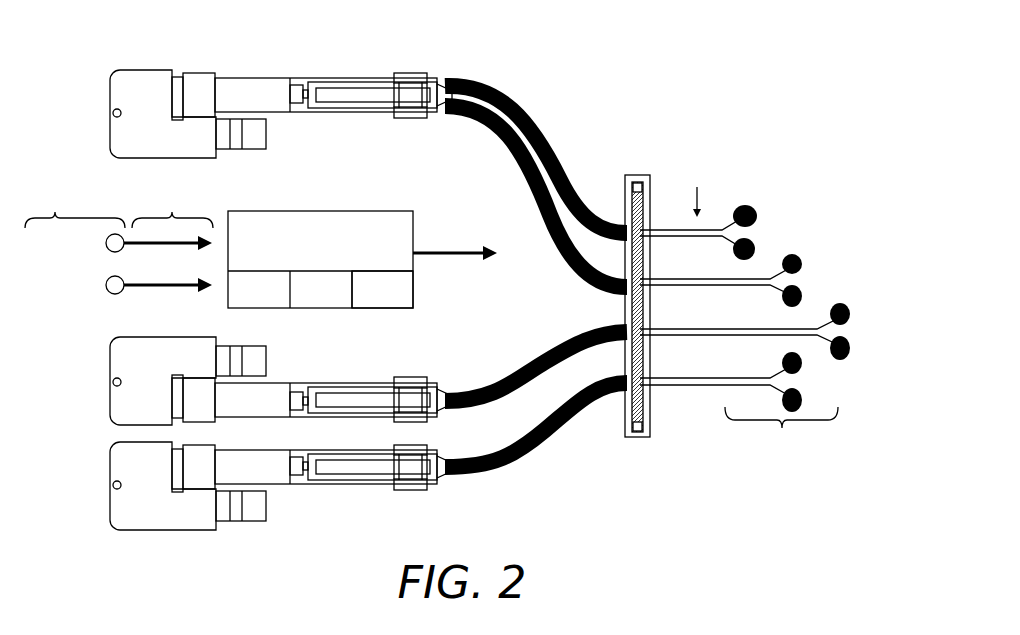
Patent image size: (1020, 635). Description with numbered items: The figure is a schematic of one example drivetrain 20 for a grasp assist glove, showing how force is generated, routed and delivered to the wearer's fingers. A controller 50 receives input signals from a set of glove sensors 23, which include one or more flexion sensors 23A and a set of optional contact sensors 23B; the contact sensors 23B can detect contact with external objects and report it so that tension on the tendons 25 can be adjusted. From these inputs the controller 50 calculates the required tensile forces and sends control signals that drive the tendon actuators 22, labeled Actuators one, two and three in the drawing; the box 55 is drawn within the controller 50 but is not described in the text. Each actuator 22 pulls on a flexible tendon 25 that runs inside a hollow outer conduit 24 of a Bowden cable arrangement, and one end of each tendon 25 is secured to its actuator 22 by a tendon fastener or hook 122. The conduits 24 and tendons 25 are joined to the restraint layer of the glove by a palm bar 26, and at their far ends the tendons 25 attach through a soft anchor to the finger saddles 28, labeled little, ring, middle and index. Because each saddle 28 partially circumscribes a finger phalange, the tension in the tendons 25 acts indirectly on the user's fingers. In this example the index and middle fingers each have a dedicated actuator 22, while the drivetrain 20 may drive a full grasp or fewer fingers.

The drivetrain 20 is at (752, 90).
The tendon actuator 22 is at (110, 108).
The glove sensors 23 is at (55, 212).
The flexion sensor 23A is at (113, 252).
The contact sensor 23B is at (113, 295).
The conduit 24 is at (540, 177).
The tendon 25 is at (410, 73).
The palm bar 26 is at (628, 437).
The finger saddle 28 is at (748, 205).
The controller 50 is at (337, 256).
The controller module 55 is at (397, 305).
The tendon fastener or hook 122 is at (302, 112).